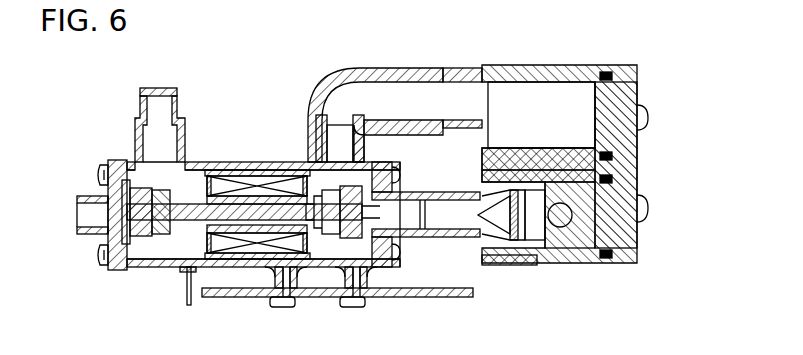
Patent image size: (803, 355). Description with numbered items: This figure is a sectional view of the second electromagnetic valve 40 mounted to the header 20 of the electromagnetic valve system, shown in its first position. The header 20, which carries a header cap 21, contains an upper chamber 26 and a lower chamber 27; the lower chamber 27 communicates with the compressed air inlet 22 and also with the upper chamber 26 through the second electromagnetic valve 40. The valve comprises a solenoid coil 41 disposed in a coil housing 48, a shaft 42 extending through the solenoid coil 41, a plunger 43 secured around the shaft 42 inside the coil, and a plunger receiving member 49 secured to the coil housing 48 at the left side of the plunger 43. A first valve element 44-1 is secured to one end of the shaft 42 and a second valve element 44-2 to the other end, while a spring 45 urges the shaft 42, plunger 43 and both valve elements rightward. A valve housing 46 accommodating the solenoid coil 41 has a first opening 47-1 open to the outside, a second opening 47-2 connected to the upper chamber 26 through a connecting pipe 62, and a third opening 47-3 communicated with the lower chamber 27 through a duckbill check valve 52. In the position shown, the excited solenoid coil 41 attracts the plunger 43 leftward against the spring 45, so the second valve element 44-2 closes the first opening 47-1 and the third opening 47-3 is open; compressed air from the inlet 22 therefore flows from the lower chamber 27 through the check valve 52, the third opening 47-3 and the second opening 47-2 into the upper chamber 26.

The header 20 is at (600, 68).
The header cap 21 is at (632, 202).
The compressed air inlet 22 is at (560, 228).
The upper chamber 26 is at (535, 100).
The lower chamber 27 is at (585, 228).
The second electromagnetic valve 40 is at (245, 160).
The solenoid coil 41 is at (232, 170).
The shaft 42 is at (236, 200).
The plunger 43 is at (300, 256).
The first valve element 44-1 is at (346, 225).
The second valve element 44-2 is at (142, 200).
The spring 45 is at (122, 168).
The valve housing 46 is at (300, 165).
The first opening 47-1 is at (100, 216).
The second opening 47-2 is at (341, 140).
The third opening 47-3 is at (405, 222).
The coil housing 48 is at (270, 180).
The plunger receiving member 49 is at (252, 222).
The duckbill check valve 52 is at (500, 238).
The connecting pipe 62 is at (385, 72).